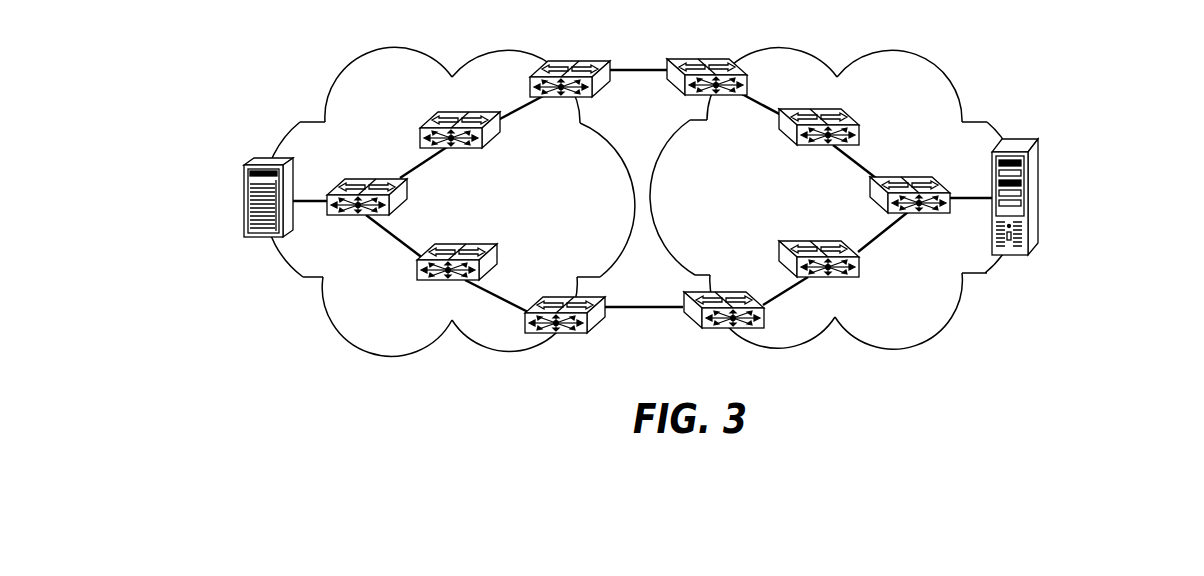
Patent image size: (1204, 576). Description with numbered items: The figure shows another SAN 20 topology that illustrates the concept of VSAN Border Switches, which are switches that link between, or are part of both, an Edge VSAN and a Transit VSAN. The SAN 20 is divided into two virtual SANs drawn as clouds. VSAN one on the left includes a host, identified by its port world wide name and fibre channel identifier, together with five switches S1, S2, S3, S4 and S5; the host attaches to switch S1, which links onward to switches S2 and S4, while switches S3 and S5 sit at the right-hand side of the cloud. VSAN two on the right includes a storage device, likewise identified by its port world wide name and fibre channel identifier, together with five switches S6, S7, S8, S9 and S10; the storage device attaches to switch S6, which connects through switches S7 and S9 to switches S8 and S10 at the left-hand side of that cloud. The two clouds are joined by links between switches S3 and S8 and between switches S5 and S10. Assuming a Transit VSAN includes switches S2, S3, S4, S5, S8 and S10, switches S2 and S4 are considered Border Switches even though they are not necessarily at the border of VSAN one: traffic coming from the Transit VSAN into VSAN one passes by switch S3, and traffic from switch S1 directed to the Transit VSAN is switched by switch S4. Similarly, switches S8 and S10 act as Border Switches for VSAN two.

The SAN topology 20 is at (635, 208).
The switch S1 is at (367, 185).
The switch S2 is at (460, 118).
The switch S3 is at (570, 67).
The switch S4 is at (457, 250).
The switch S5 is at (565, 304).
The switch S6 is at (910, 182).
The switch S7 is at (819, 116).
The switch S8 is at (707, 64).
The switch S9 is at (819, 246).
The switch S10 is at (724, 298).